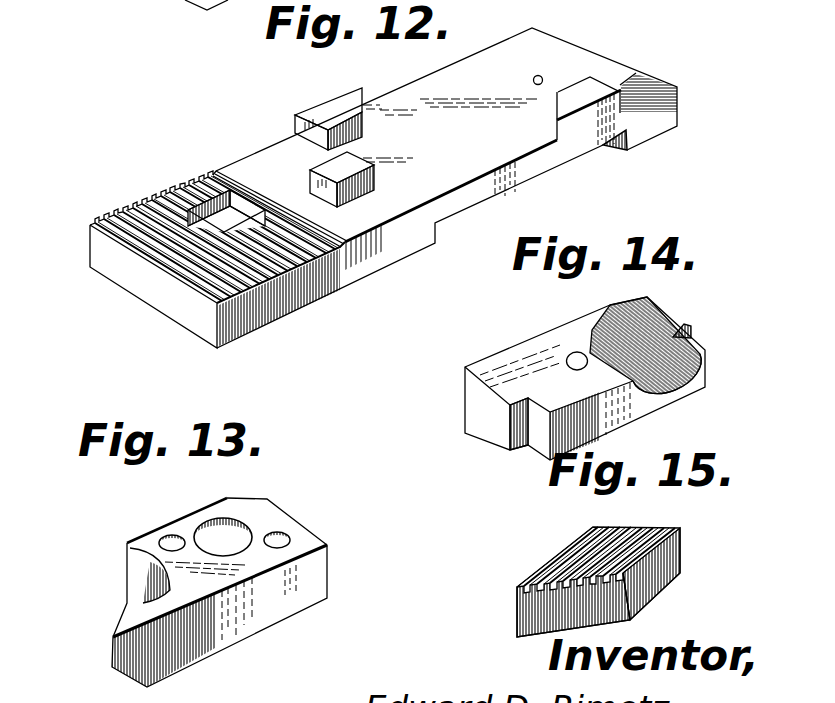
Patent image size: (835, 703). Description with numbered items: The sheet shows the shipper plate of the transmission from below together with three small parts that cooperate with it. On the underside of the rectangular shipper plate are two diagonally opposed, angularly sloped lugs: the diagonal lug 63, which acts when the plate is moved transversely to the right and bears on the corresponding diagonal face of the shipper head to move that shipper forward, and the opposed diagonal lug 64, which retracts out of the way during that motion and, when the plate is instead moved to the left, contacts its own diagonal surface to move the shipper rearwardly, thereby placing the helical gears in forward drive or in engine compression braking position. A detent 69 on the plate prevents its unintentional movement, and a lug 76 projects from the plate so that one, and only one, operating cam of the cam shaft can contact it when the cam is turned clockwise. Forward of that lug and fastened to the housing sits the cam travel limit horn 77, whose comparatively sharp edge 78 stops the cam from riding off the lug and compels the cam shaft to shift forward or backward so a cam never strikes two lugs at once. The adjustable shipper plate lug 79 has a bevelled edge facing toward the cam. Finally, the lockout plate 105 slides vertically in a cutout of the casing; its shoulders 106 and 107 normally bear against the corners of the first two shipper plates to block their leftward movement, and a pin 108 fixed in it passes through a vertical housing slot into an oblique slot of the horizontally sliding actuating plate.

In FIG. 12, the diagonal lug 63 is at (329, 110).
In FIG. 12, the opposed diagonal lug 64 is at (570, 98).
In FIG. 12, the detent 69 is at (536, 76).
In FIG. 12, the lug 76 is at (334, 166).
In FIG. 13, the cam travel limit horn 77 is at (303, 583).
In FIG. 13, the sharp edge 78 is at (112, 655).
In FIG. 15, the adjustable shipper plate lug 79 is at (657, 577).
In FIG. 14, the lockout plate 105 is at (585, 378).
In FIG. 14, the shoulder 106 is at (512, 403).
In FIG. 14, the shoulder 107 is at (692, 328).
In FIG. 14, the pin 108 is at (583, 351).